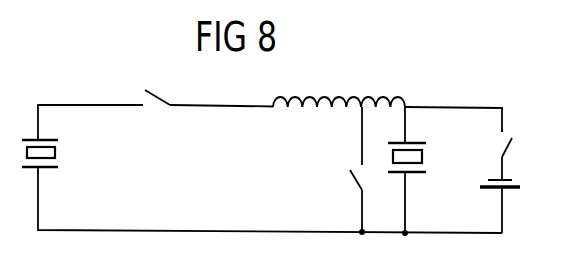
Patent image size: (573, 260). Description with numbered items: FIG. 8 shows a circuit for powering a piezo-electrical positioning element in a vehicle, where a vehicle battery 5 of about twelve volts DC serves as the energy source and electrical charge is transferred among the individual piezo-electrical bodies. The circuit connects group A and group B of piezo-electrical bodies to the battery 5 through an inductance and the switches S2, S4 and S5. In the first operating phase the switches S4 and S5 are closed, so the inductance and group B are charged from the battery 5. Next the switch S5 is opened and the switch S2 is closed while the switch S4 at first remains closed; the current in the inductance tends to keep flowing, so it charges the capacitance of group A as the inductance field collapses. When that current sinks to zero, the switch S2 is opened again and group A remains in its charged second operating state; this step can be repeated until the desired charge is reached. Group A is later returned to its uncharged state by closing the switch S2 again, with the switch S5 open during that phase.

The group A is at (51, 152).
The group B is at (419, 171).
The switch S2 is at (168, 82).
The switch S4 is at (521, 156).
The switch S5 is at (344, 171).
The vehicle battery 5 is at (503, 190).